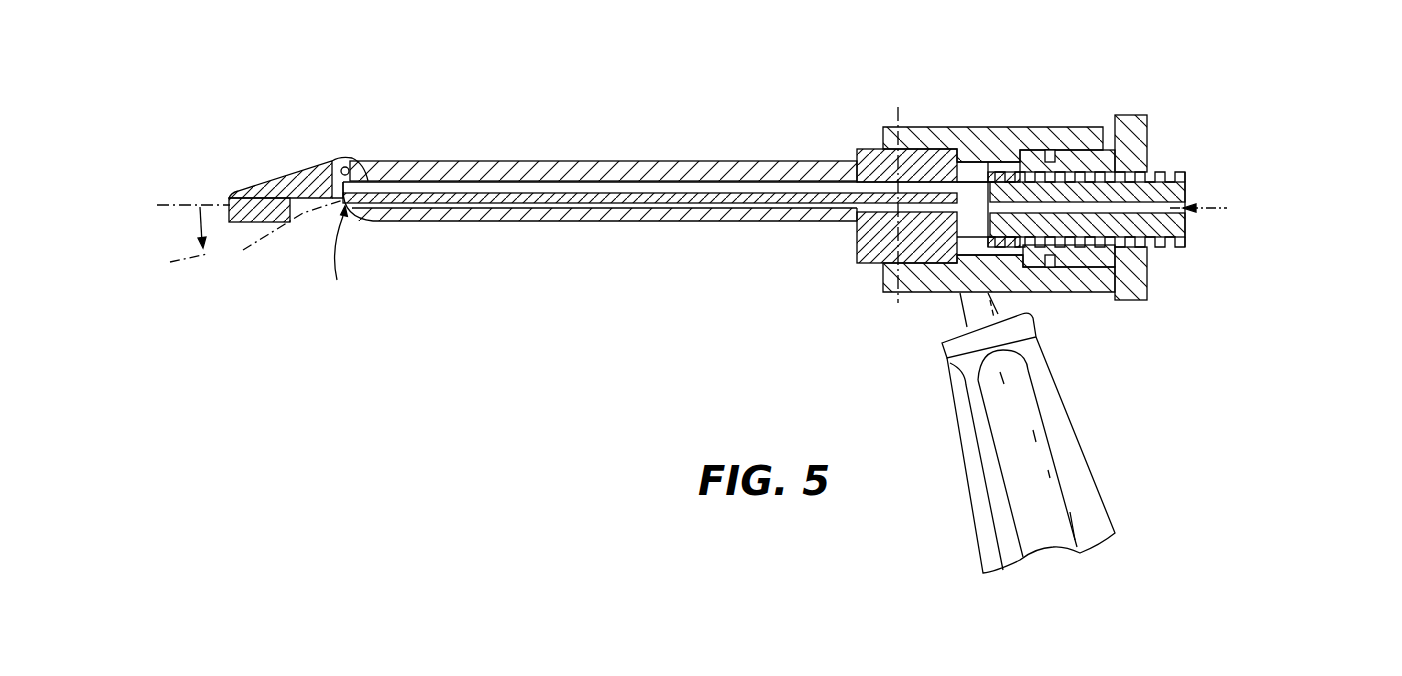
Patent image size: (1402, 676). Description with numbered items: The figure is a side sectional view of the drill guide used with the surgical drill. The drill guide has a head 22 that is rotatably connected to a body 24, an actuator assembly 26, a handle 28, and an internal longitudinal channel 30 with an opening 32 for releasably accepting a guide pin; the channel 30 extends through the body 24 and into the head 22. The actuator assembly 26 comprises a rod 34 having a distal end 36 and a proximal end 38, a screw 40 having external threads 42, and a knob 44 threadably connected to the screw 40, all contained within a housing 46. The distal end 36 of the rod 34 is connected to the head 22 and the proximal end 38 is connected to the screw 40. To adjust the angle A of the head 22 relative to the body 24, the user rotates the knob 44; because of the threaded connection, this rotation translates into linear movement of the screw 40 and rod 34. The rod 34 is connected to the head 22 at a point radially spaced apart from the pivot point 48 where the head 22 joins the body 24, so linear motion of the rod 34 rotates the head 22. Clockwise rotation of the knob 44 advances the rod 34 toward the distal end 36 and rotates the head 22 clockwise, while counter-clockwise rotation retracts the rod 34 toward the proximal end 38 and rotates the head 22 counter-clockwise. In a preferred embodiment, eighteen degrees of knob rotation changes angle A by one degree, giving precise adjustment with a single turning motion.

The head 22 is at (305, 160).
The body 24 is at (565, 165).
The actuator assembly 26 is at (969, 116).
The handle 28 is at (1060, 470).
The internal longitudinal channel 30 is at (250, 205).
The opening 32 is at (1187, 218).
The rod 34 is at (803, 185).
The distal end 36 is at (337, 254).
The proximal end 38 is at (1000, 180).
The screw 40 is at (1182, 183).
The external threads 42 is at (1172, 151).
The knob 44 is at (1130, 300).
The housing 46 is at (1075, 293).
The pivot point 48 is at (350, 167).
The angle A is at (186, 218).